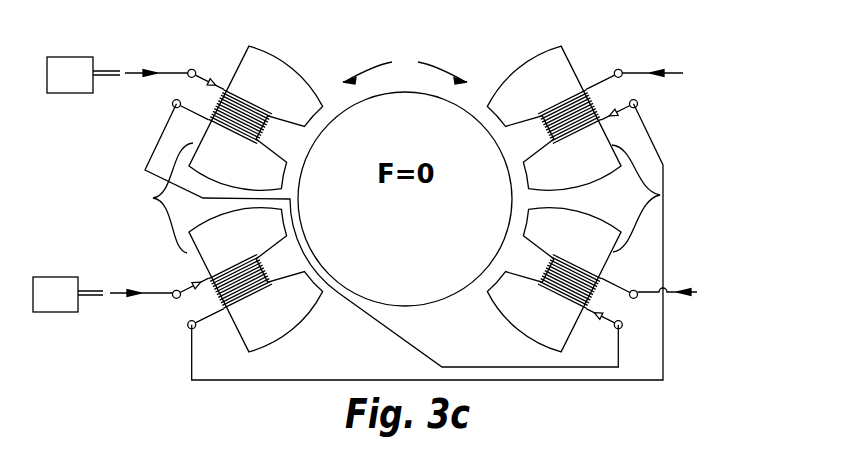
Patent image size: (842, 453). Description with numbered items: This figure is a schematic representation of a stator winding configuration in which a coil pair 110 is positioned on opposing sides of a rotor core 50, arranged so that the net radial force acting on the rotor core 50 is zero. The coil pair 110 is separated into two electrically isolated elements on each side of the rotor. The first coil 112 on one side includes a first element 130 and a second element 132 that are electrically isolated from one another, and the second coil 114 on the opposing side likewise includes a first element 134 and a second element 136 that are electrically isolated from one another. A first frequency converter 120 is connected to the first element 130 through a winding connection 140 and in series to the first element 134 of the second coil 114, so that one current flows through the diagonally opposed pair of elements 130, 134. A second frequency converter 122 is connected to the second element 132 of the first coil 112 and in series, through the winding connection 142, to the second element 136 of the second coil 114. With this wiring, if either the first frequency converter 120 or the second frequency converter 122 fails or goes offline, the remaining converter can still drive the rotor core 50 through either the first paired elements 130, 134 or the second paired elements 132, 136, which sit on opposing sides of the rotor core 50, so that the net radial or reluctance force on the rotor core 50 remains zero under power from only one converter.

The rotor core 50 is at (414, 235).
The coil pair 110 is at (405, 62).
The first coil 112 is at (153, 198).
The second coil 114 is at (661, 195).
The first frequency converter 120 is at (55, 86).
The second frequency converter 122 is at (41, 305).
The first element of first coil 130 is at (281, 73).
The second element of first coil 132 is at (273, 327).
The first element of second coil 134 is at (522, 307).
The second element of second coil 136 is at (538, 75).
The winding connection 140 is at (220, 78).
The winding connection 142 is at (190, 299).